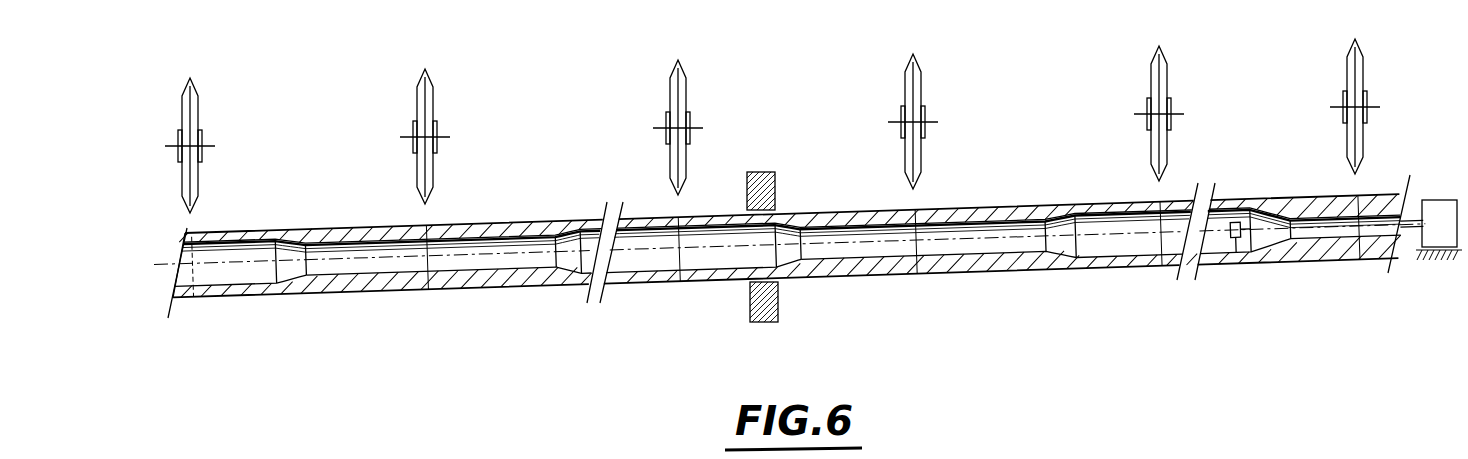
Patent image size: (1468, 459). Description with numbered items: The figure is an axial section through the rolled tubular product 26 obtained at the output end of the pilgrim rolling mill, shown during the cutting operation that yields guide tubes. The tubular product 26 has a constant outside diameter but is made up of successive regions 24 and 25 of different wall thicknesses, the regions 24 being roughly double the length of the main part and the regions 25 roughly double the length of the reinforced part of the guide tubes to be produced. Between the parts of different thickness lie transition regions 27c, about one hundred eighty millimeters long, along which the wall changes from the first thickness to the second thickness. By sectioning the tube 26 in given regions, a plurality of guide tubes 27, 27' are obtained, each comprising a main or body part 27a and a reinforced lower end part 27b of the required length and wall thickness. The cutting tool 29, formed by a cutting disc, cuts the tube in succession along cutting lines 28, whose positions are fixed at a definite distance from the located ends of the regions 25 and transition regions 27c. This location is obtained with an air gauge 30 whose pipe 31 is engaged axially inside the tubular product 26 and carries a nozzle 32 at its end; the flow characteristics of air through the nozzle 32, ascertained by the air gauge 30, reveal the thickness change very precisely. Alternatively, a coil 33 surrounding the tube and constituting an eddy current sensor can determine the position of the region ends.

The region of first wall thickness 24 is at (652, 218).
The region of second wall thickness 25 is at (507, 232).
The tubular product 26 is at (571, 181).
The guide tube 27 is at (790, 279).
The main or body part 27a is at (640, 287).
The reinforced lower end part 27b is at (400, 285).
The transition region 27c is at (292, 283).
The guide tube 27' is at (1129, 298).
The cutting line 28 is at (392, 228).
The cutting tool 29 is at (418, 80).
The air gauge 30 is at (1443, 238).
The pipe 31 is at (1304, 191).
The nozzle 32 is at (1235, 192).
The coil 33 is at (776, 180).